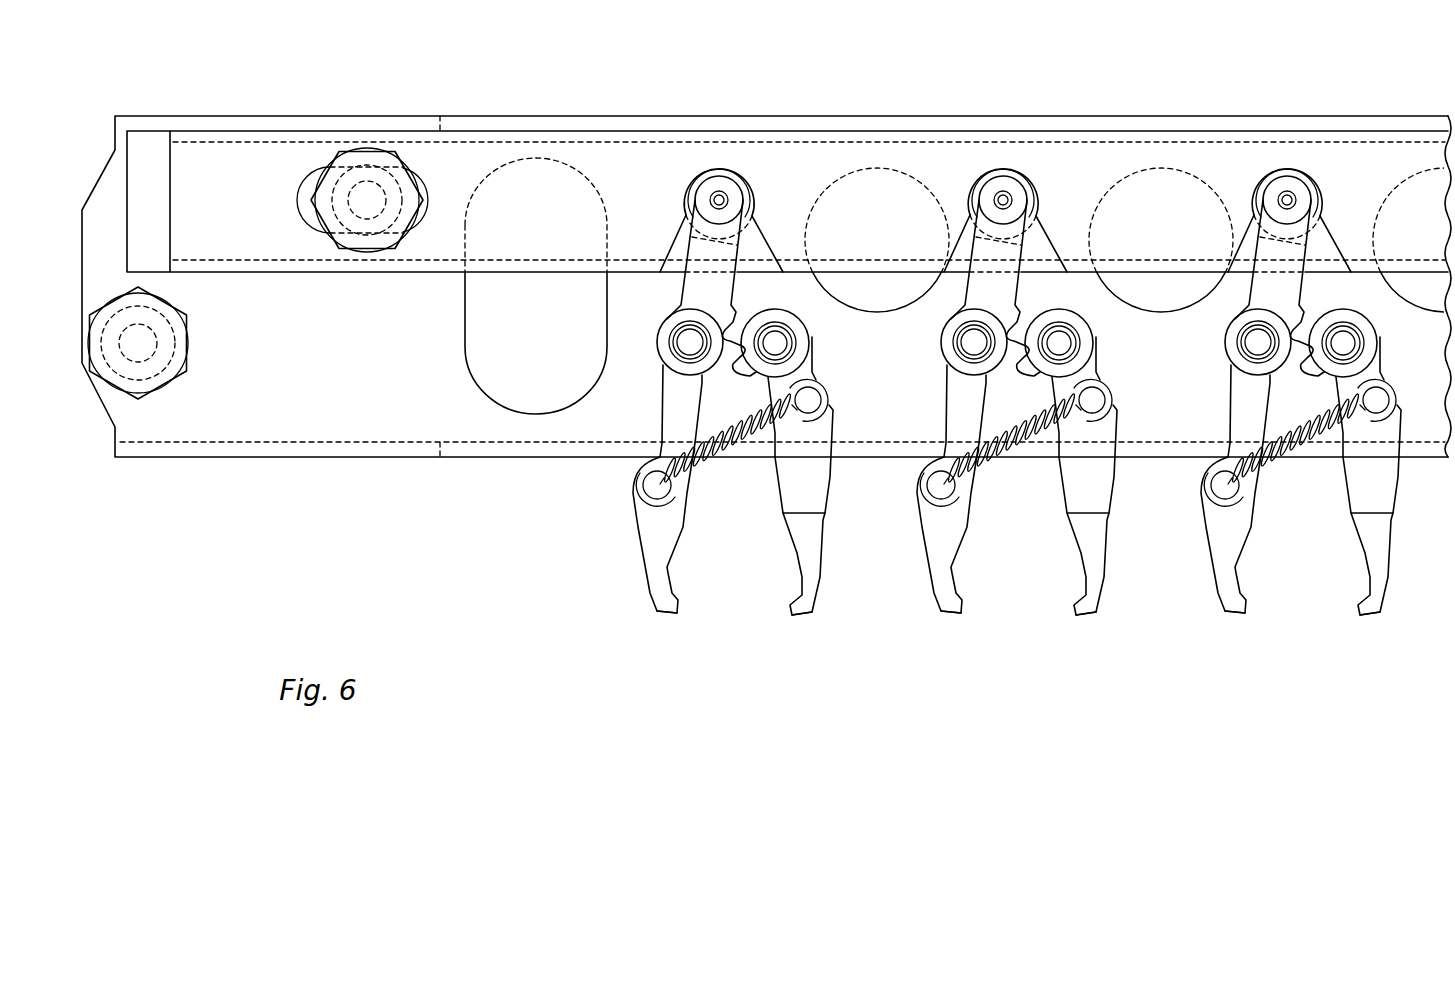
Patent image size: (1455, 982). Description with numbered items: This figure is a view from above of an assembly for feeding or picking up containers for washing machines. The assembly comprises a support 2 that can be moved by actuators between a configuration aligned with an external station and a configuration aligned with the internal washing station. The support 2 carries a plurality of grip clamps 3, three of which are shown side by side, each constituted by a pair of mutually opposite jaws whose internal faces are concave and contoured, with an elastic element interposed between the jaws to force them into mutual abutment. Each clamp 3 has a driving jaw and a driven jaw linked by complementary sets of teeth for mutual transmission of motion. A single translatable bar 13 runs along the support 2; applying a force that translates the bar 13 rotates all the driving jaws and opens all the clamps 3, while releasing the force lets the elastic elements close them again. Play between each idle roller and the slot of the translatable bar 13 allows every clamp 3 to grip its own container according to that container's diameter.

The support 2 is at (297, 373).
The grip clamp 3 is at (718, 385).
The translatable bar 13 is at (253, 172).